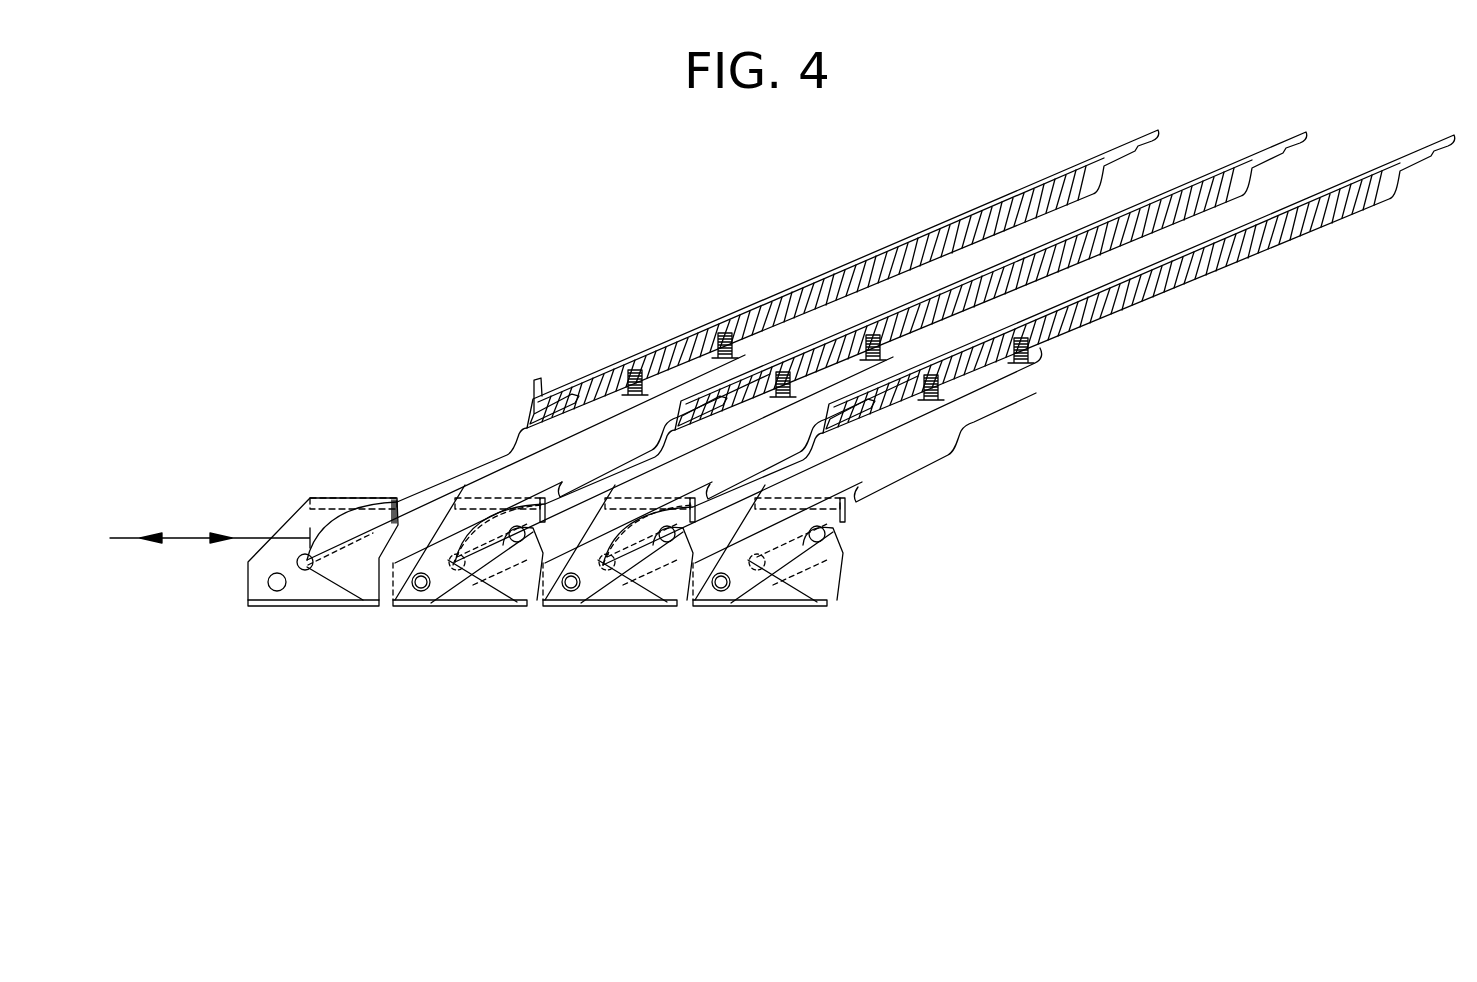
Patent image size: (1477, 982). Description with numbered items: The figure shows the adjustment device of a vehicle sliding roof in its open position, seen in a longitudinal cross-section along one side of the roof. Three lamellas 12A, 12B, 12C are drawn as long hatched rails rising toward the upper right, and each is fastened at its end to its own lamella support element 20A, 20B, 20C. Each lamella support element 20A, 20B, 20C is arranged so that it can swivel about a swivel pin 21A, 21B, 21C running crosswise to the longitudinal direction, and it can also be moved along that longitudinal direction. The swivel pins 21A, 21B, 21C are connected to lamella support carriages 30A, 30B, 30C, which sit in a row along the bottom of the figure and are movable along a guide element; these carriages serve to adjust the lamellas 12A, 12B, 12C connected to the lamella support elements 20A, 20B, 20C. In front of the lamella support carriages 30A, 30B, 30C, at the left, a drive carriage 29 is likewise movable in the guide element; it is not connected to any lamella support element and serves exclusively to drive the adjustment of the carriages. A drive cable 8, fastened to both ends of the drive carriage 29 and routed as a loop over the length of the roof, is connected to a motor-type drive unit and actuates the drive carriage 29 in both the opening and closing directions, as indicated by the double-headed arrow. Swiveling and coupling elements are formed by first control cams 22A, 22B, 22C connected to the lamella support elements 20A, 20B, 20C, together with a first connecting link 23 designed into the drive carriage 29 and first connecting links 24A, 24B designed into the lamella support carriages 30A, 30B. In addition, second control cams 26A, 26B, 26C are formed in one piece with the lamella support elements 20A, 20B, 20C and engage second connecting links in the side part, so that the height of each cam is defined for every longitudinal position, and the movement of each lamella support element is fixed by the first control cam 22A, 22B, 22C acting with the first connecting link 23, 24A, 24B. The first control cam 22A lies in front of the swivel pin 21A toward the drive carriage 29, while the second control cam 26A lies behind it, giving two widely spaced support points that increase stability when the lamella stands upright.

The drive cable 8 is at (182, 538).
The lamella 12A is at (1015, 200).
The lamella 12B is at (1055, 186).
The lamella 12C is at (1074, 185).
The lamella support element 20A is at (612, 438).
The lamella support element 20B is at (617, 443).
The lamella support element 20C is at (639, 430).
The swivel pin 21A is at (429, 602).
The swivel pin 21B is at (627, 572).
The swivel pin 21C is at (777, 588).
The first control cam 22A is at (304, 572).
The first control cam 22B is at (456, 572).
The first control cam 22C is at (646, 598).
The first connecting link 23 is at (360, 515).
The first connecting link 24A is at (503, 503).
The first connecting link 24B is at (773, 358).
The second control cam 26A is at (517, 542).
The second control cam 26B is at (640, 634).
The second control cam 26C is at (815, 574).
The drive carriage 29 is at (293, 537).
The lamella support carriage 30A is at (460, 500).
The lamella support carriage 30B is at (595, 421).
The lamella support carriage 30C is at (809, 596).